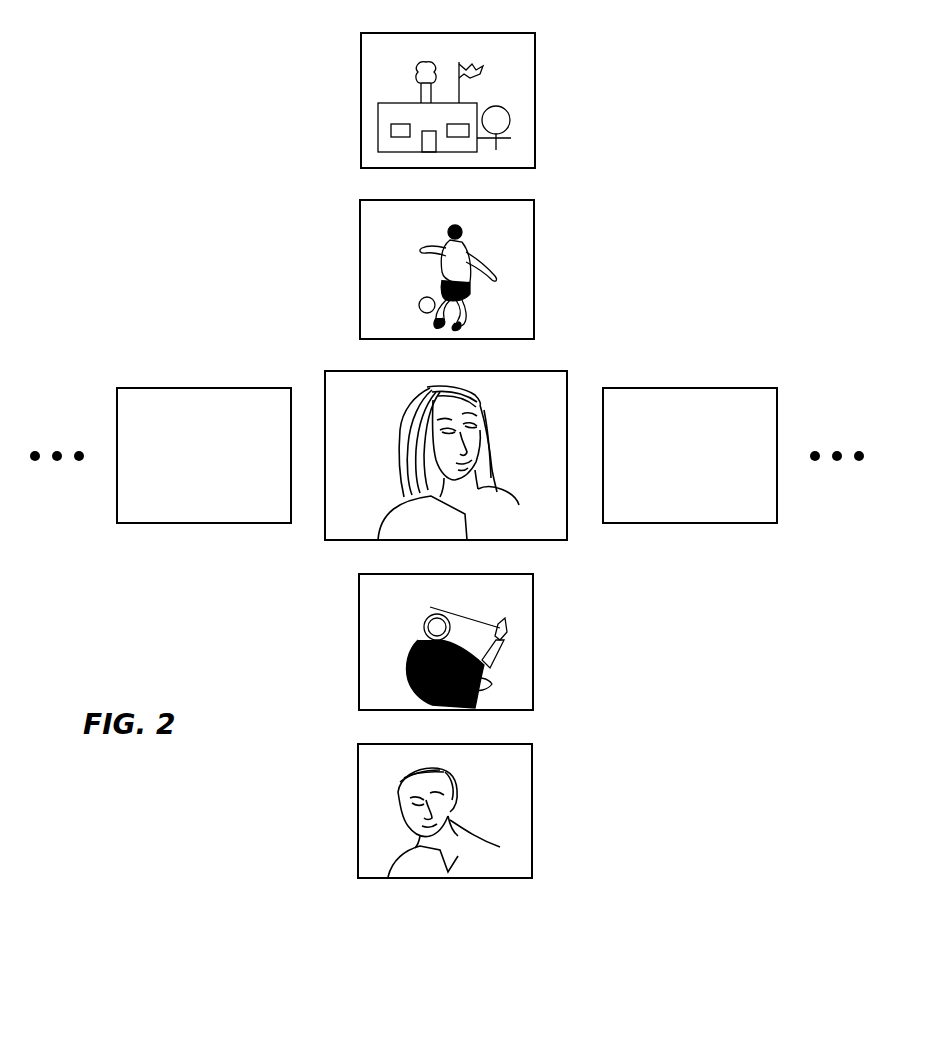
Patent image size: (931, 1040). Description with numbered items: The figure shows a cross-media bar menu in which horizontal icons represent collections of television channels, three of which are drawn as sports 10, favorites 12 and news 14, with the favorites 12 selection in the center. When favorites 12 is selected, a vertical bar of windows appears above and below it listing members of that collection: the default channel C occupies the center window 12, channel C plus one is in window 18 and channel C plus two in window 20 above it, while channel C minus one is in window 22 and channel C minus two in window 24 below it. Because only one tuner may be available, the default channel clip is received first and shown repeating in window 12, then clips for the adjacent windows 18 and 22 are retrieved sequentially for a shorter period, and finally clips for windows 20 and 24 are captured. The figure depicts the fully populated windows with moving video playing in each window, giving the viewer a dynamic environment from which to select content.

The sports 10 is at (238, 388).
The favorites 12 is at (567, 396).
The news 14 is at (724, 523).
The window 18 is at (360, 255).
The window 20 is at (535, 50).
The window 22 is at (359, 609).
The window 24 is at (532, 810).